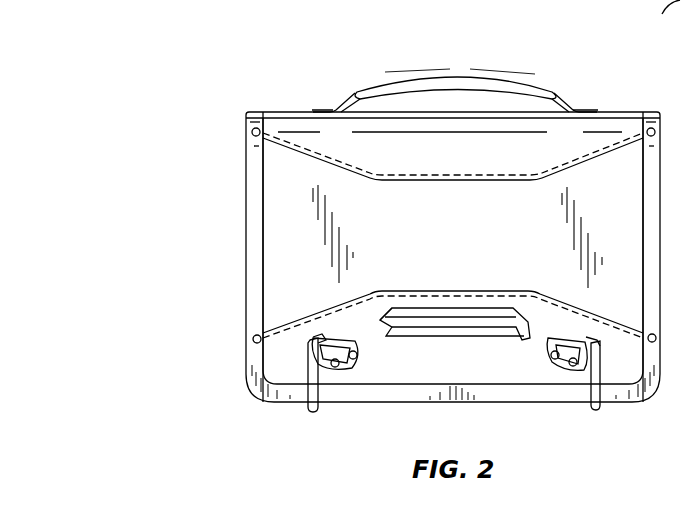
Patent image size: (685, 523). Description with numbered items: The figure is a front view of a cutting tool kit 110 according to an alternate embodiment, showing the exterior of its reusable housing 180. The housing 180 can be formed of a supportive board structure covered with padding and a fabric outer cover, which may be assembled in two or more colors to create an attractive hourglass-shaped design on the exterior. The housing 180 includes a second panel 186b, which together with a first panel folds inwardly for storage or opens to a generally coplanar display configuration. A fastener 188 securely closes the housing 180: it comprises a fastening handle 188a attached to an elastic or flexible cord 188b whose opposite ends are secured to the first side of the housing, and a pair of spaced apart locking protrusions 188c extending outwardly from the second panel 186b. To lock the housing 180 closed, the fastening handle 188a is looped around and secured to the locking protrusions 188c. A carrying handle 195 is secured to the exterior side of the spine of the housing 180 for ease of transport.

The cutting tool kit 110 is at (244, 389).
The housing 180 is at (247, 156).
The second panel 186b is at (297, 270).
The fastener 188 is at (323, 410).
The fastening handle 188a is at (537, 327).
The flexible cord 188b is at (603, 372).
The locking protrusions 188c is at (563, 370).
The carrying handle 195 is at (453, 72).